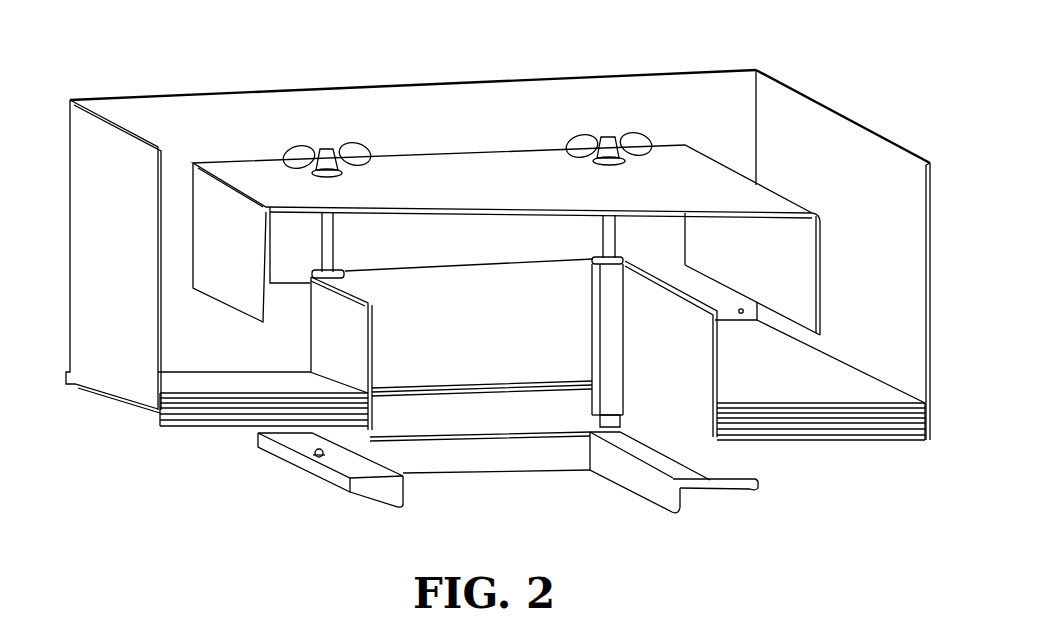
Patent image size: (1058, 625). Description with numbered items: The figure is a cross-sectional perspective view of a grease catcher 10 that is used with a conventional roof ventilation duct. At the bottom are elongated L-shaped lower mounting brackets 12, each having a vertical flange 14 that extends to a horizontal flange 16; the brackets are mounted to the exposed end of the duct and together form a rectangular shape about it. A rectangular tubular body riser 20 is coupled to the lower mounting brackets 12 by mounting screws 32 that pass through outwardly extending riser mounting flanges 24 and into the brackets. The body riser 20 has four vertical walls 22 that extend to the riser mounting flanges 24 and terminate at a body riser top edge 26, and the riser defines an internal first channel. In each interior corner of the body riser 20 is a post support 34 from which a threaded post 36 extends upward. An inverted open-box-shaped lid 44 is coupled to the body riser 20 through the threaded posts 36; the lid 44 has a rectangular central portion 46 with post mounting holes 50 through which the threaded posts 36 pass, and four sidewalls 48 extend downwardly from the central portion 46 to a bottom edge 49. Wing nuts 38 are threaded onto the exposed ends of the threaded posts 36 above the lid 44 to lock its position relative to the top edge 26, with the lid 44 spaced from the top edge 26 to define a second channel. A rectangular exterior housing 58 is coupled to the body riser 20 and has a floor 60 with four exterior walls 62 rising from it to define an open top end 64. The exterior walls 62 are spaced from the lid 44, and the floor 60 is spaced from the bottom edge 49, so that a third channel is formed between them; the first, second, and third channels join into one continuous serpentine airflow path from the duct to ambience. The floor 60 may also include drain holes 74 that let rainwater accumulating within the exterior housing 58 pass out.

The grease catcher 10 is at (216, 492).
The lower mounting bracket 12 is at (648, 494).
The vertical flange 14 is at (680, 490).
The horizontal flange 16 is at (745, 483).
The body riser 20 is at (500, 373).
The vertical wall 22 is at (531, 318).
The riser mounting flange 24 is at (735, 470).
The body riser top edge 26 is at (482, 265).
The mounting screw 32 is at (320, 458).
The post support 34 is at (612, 334).
The threaded post 36 is at (613, 237).
The wing nut 38 is at (633, 140).
The lid 44 is at (462, 166).
The central portion 46 is at (517, 167).
The sidewall 48 is at (800, 258).
The bottom edge 49 is at (800, 325).
The post mounting hole 50 is at (350, 177).
The exterior housing 58 is at (793, 113).
The floor 60 is at (850, 444).
The exterior wall 62 is at (857, 183).
The open top end 64 is at (201, 126).
The drain hole 74 is at (222, 430).